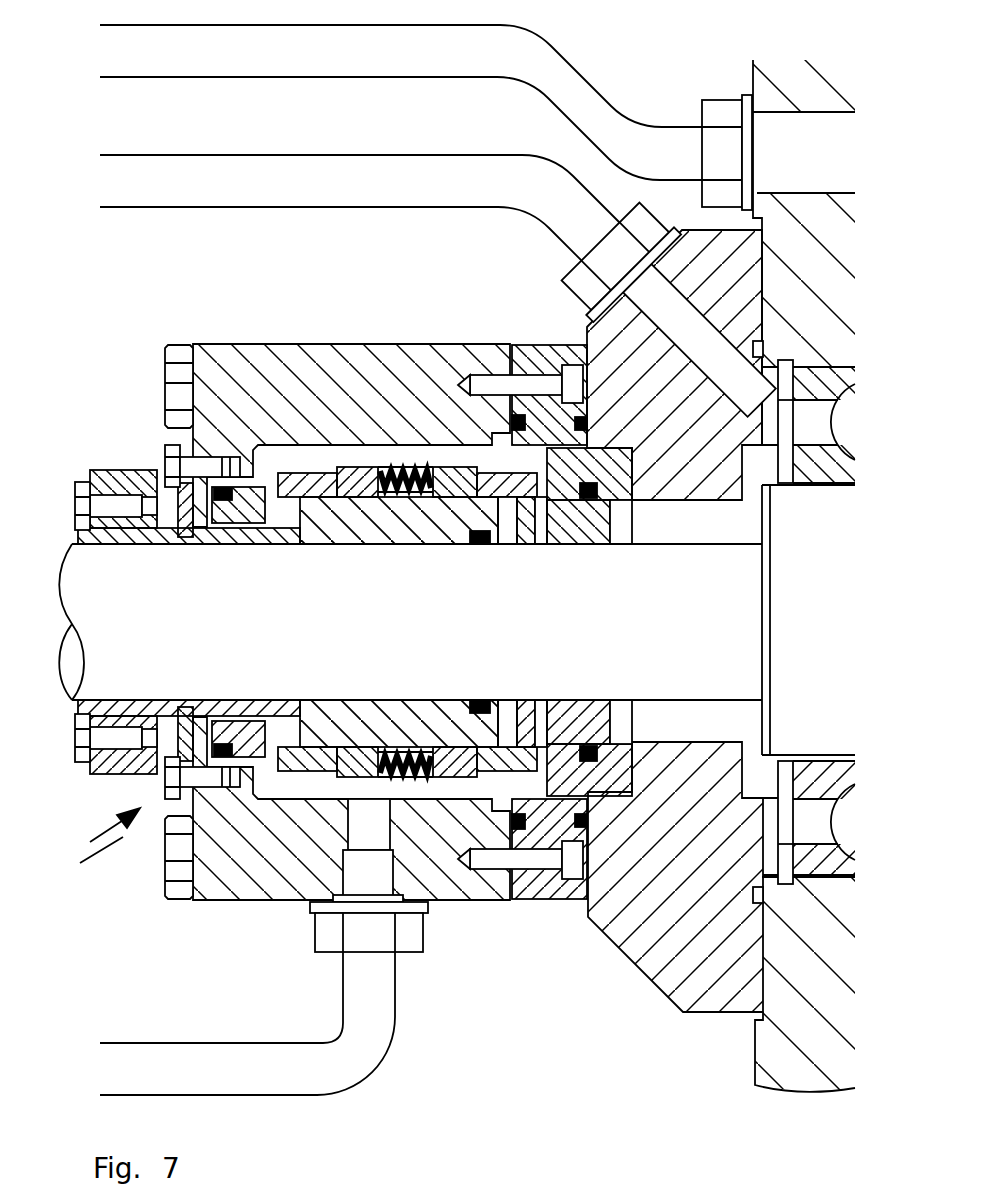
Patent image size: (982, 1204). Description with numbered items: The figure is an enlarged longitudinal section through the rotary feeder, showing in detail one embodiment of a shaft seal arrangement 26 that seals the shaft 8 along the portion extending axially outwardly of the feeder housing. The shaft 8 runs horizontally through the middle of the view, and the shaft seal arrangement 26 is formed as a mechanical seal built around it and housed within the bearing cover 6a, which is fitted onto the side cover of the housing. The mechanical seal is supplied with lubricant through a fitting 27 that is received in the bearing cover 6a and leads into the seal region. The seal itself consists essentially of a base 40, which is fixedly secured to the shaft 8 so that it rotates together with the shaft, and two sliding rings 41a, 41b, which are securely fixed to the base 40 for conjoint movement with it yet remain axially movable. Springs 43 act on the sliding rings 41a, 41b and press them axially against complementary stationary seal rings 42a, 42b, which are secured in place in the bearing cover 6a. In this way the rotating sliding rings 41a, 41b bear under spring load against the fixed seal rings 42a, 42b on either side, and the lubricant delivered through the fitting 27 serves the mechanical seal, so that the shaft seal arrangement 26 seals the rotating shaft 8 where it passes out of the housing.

The bearing cover 6a is at (195, 388).
The shaft 8 is at (359, 641).
The shaft seal arrangement 26 is at (91, 853).
The fitting 27 is at (373, 953).
The base 40 is at (330, 517).
The sliding ring 41a is at (301, 775).
The sliding ring 41b is at (455, 750).
The stationary seal ring 42a is at (258, 765).
The stationary seal ring 42b is at (570, 830).
The springs 43 is at (400, 468).